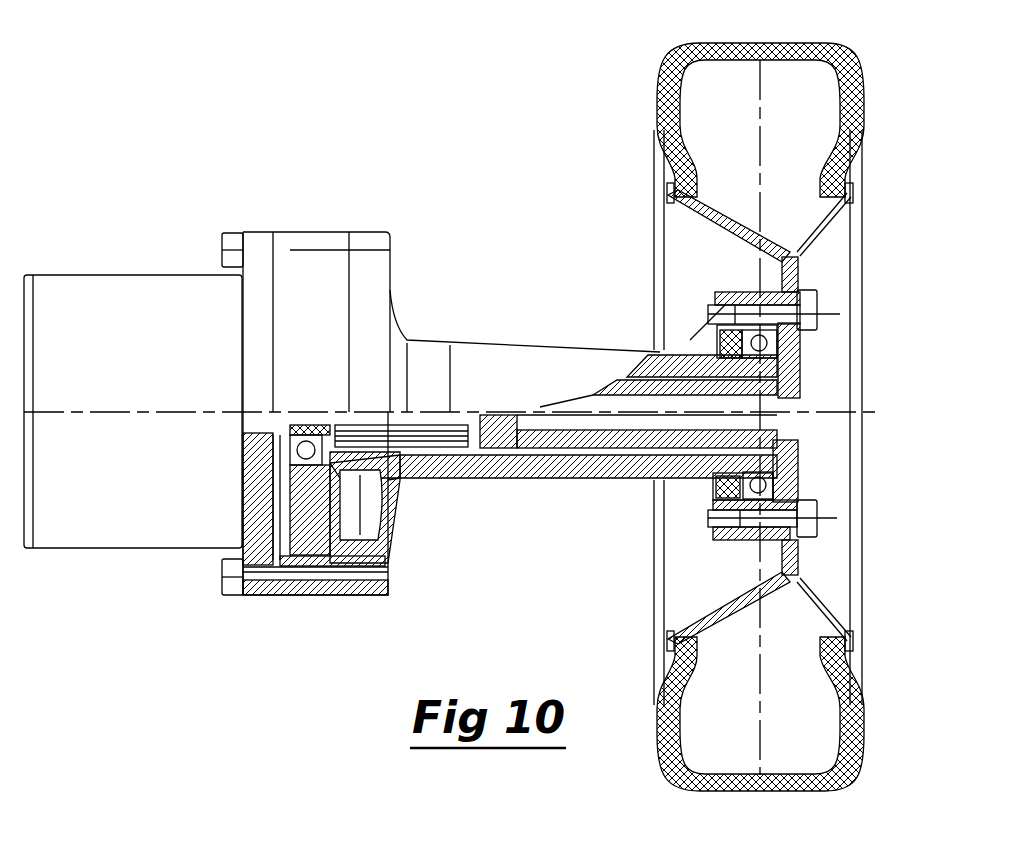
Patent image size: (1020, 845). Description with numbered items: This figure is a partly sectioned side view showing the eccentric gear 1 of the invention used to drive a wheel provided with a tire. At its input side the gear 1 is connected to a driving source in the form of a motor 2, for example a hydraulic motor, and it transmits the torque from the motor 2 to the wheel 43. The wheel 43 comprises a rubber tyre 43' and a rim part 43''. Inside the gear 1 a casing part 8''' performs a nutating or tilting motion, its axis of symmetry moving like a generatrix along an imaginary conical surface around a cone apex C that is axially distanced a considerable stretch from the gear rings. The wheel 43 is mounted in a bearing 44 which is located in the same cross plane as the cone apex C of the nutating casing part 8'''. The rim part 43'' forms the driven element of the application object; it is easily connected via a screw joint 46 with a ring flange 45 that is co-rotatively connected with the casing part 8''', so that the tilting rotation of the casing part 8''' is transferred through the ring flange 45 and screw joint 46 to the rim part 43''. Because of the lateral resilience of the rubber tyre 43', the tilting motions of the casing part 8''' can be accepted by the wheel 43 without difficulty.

The eccentric gear 1 is at (518, 330).
The motor 2 is at (130, 300).
The nutating casing part 8''' is at (370, 494).
The wheel 43 is at (714, 120).
The rubber tyre 43' is at (726, 711).
The rim part 43'' is at (715, 417).
The bearing 44 is at (762, 487).
The ring flange 45 is at (730, 545).
The screw joint 46 is at (808, 300).
The cone apex C is at (762, 410).